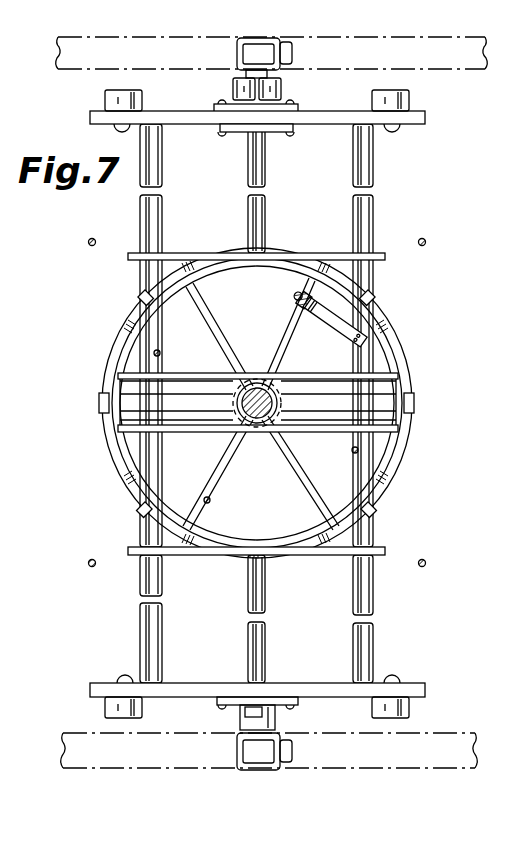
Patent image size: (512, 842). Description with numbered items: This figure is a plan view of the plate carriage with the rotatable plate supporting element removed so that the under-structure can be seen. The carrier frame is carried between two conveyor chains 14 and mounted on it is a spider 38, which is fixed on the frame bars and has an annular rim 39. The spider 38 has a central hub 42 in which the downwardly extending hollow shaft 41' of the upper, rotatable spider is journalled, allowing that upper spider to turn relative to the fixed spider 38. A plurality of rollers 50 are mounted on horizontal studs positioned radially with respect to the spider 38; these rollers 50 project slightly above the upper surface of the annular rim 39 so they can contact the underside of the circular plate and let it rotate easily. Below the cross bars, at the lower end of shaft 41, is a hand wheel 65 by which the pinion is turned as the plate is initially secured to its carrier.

The conveyor chain 14 is at (212, 36).
The spider 38 is at (178, 432).
The annular rim 39 is at (127, 470).
The shaft 41 is at (257, 428).
The hollow shaft 41' is at (257, 378).
The hub 42 is at (292, 410).
The rollers 50 is at (140, 297).
The hand wheel 65 is at (117, 348).